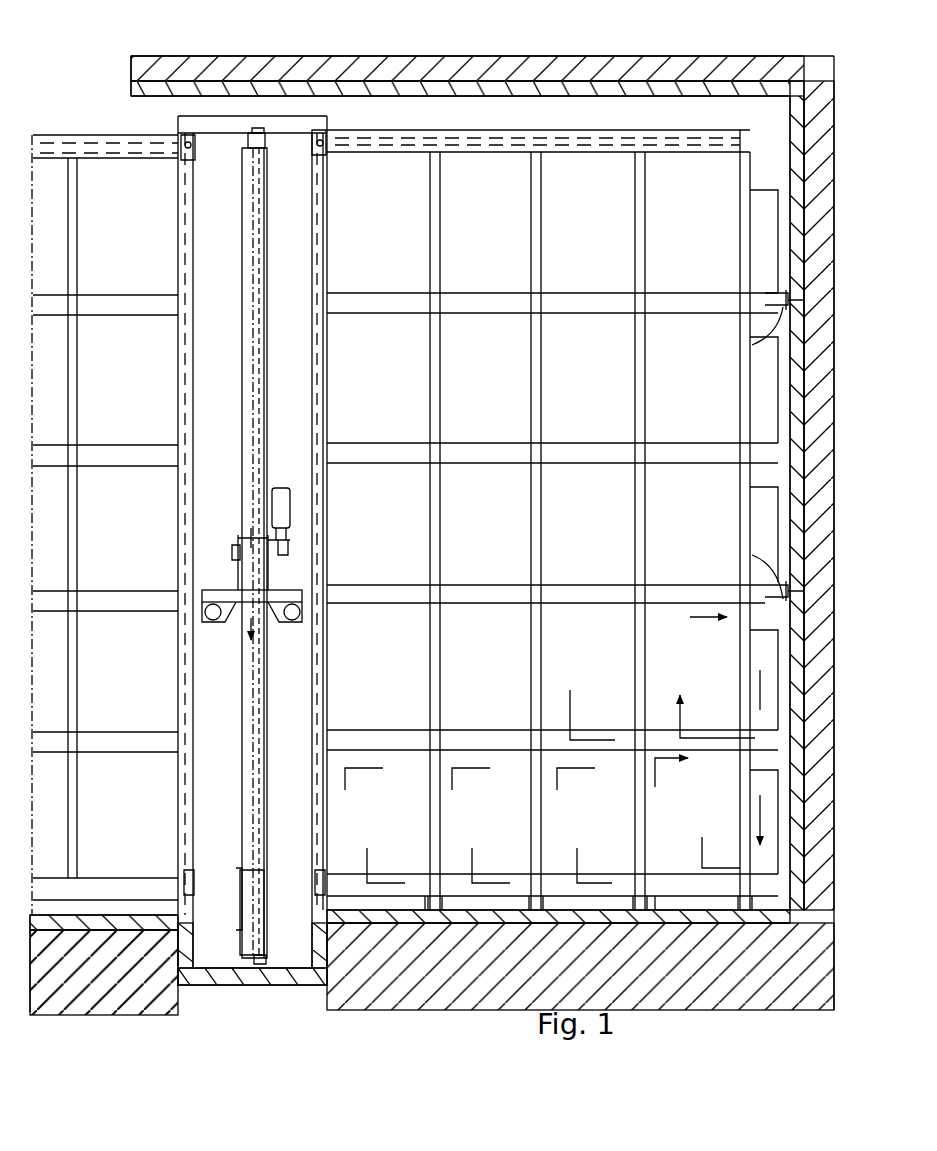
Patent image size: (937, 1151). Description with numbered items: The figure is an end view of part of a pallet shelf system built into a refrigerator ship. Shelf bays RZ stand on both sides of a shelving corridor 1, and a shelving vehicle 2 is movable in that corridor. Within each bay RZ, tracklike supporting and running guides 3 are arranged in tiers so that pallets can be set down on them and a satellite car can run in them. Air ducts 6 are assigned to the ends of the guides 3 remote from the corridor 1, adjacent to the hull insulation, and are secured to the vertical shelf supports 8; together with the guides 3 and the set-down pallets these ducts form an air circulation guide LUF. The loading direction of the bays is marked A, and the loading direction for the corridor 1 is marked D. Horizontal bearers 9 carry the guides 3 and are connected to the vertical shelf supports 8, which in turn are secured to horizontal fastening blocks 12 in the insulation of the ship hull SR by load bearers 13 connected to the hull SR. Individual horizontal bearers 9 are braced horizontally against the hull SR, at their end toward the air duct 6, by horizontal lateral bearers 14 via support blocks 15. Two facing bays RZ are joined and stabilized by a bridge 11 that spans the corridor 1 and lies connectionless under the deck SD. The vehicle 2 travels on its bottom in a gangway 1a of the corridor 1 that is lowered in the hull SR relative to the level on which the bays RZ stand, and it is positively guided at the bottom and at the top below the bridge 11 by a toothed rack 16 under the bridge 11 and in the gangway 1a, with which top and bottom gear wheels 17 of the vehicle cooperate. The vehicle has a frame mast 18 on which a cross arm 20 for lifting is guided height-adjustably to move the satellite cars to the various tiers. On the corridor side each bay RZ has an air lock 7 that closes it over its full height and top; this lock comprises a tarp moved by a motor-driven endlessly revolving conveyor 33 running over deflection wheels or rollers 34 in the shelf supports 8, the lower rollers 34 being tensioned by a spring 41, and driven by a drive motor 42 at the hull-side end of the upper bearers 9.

The shelving corridor 1 is at (222, 406).
The gangway 1a is at (213, 945).
The shelving vehicle 2 is at (270, 716).
The supporting and running guides 3 is at (485, 315).
The air ducts 6 is at (765, 215).
The air lock 7 is at (88, 155).
The vertical shelf supports 8 is at (430, 380).
The horizontal bearers 9 is at (122, 158).
The bridge 11 is at (233, 125).
The horizontal fastening blocks 12 is at (520, 915).
The load bearers 13 is at (435, 912).
The horizontal lateral bearers 14 is at (765, 312).
The support blocks 15 is at (752, 347).
The toothed rack 16 is at (256, 128).
The gear wheels 17 is at (266, 142).
The frame mast 18 is at (250, 691).
The cross arm 20 is at (278, 592).
The conveyor 33 is at (330, 637).
The deflection wheels or rollers 34 is at (322, 145).
The spring 41 is at (318, 872).
The drive motor 42 is at (737, 150).
The shelf bays RZ is at (80, 128).
The deck SD is at (190, 75).
The ship hull SR is at (822, 182).
The air circulation guide LUF is at (692, 617).
The loading direction for the corridor D is at (540, 570).
The loading direction A is at (535, 570).